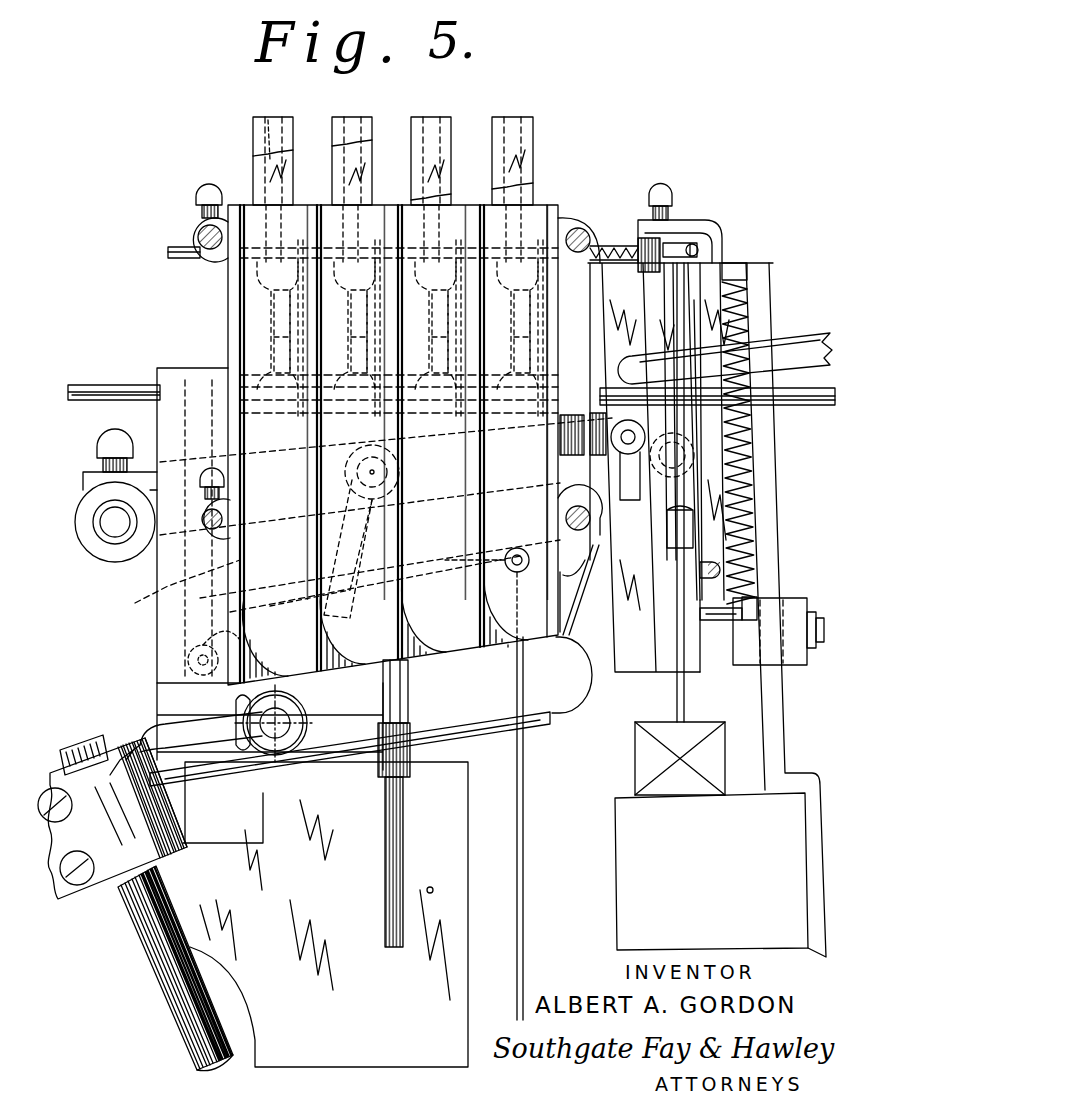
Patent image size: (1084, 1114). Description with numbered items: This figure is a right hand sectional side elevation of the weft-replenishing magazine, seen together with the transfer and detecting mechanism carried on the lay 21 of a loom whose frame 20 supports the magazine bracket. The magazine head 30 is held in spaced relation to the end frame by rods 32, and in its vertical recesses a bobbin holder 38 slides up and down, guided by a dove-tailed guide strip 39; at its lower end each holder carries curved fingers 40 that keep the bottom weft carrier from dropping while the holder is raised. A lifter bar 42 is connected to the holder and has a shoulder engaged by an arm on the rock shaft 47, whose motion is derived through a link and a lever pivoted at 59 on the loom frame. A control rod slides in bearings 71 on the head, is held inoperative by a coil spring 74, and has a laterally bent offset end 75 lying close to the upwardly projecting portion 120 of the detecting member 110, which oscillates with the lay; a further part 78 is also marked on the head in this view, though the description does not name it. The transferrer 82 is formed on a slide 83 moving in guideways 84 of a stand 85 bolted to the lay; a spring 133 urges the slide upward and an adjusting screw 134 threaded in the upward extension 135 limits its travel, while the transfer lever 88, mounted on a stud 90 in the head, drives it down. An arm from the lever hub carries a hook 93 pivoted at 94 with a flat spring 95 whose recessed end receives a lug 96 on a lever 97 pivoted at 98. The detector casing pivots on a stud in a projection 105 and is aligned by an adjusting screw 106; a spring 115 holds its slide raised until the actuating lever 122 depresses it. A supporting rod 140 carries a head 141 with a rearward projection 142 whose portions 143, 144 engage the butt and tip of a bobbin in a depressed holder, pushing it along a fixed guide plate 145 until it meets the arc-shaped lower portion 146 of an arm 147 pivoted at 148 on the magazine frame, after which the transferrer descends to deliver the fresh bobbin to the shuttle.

The loom frame 20 is at (465, 855).
The lay 21 is at (711, 836).
The magazine head 30 is at (238, 330).
The rods 32 is at (200, 232).
The bobbin holder 38 is at (240, 566).
The dove-tailed guide strip 39 is at (292, 146).
The curved fingers 40 is at (430, 628).
The lifter bar 42 is at (272, 118).
The rock shaft 47 is at (124, 385).
The pivot 59 is at (181, 586).
The bearings 71 is at (240, 268).
The coil spring 74 is at (612, 246).
The offset end 75 is at (705, 232).
The rod 78 is at (168, 254).
The transferrer 82 is at (660, 630).
The slide 83 is at (708, 648).
The guideways 84 is at (765, 292).
The stand 85 is at (792, 598).
The transfer lever 88 is at (590, 410).
The stud 90 is at (112, 522).
The hook 93 is at (340, 585).
The pivot 94 is at (360, 458).
The flat spring 95 is at (306, 618).
The lug 96 is at (292, 620).
The lever 97 is at (206, 640).
The pivot 98 is at (408, 684).
The projection 105 is at (588, 590).
The adjusting screw 106 is at (588, 578).
The detecting member 110 is at (677, 694).
The spring 115 is at (290, 710).
The upwardly projecting portion 120 is at (680, 411).
The actuating lever 122 is at (782, 345).
The spring 133 is at (745, 290).
The adjusting screw 134 is at (662, 192).
The upward extension 135 is at (722, 238).
The supporting rod 140 is at (180, 928).
The head 141 is at (120, 760).
The rearward projection 142 is at (201, 732).
The portion 143 is at (236, 710).
The portion 144 is at (261, 722).
The fixed guide plate 145 is at (483, 730).
The arc-shaped lower portion 146 is at (572, 705).
The arm 147 is at (600, 298).
The pivot 148 is at (578, 228).